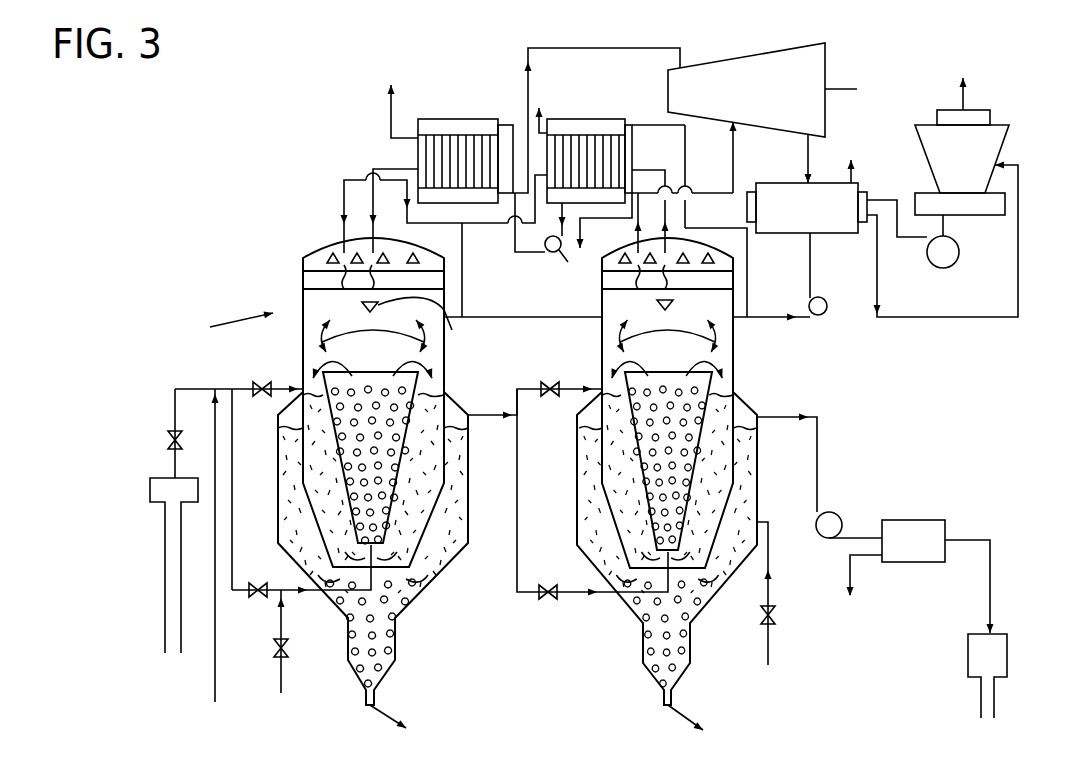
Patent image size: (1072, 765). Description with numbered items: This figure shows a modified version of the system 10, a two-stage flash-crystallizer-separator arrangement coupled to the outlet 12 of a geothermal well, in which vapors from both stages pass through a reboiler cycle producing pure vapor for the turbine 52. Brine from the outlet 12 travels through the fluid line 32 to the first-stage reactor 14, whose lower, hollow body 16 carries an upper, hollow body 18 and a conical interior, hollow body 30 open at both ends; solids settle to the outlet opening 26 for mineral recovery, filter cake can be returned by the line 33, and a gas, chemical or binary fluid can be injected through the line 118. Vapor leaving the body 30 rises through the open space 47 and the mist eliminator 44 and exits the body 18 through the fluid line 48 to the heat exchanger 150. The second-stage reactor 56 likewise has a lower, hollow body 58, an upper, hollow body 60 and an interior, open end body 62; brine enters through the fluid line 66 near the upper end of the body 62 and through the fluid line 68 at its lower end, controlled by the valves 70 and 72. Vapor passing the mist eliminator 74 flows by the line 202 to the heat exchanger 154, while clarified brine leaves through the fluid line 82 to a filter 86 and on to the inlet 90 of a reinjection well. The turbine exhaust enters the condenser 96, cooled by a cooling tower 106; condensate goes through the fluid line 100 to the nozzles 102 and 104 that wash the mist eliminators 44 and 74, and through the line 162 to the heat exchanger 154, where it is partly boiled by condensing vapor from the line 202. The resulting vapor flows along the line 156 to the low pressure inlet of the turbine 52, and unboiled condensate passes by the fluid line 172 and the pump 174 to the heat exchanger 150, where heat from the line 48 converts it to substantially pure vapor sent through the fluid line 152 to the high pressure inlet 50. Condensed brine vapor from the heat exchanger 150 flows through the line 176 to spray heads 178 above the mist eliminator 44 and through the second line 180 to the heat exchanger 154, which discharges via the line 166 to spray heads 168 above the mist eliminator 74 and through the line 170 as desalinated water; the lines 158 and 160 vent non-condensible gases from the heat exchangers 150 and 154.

The system 10 is at (228, 322).
The outlet of geothermal well 12 is at (175, 478).
The reactor 14 is at (436, 599).
The lower, hollow body 16 is at (468, 492).
The upper, hollow body 18 is at (447, 362).
The outlet opening 26 is at (358, 678).
The interior, hollow body 30 is at (347, 490).
The fluid line 32 is at (175, 395).
The line 33 is at (213, 668).
The mist eliminator 44 is at (301, 259).
The open space 47 is at (383, 359).
The fluid line 48 is at (387, 168).
The high pressure inlet 50 is at (682, 64).
The turbine 52 is at (790, 40).
The reactor 56 is at (716, 600).
The lower, hollow body 58 is at (757, 480).
The upper, hollow body 60 is at (735, 385).
The interior, open end body 62 is at (690, 493).
The fluid line 66 is at (522, 388).
The fluid line 68 is at (517, 550).
The valve 70 is at (555, 383).
The valve 72 is at (550, 601).
The mist eliminator 74 is at (735, 280).
The fluid line 82 is at (768, 414).
The filter 86 is at (940, 482).
The inlet of reinjection well 90 is at (992, 633).
The condenser 96 is at (805, 232).
The fluid line 100 is at (522, 318).
The nozzle 102 is at (423, 328).
The nozzle 104 is at (672, 304).
The cooling tower 106 is at (992, 147).
The line 118 is at (283, 618).
The heat exchanger 150 is at (467, 117).
The fluid line 152 is at (531, 80).
The heat exchanger 154 is at (607, 115).
The line 156 is at (733, 178).
The line 158 is at (392, 107).
The line 160 is at (552, 97).
The line 162 is at (744, 230).
The line 166 is at (633, 178).
The spray heads 168 is at (638, 293).
The line 170 is at (622, 214).
The fluid line 172 is at (526, 262).
The pump 174 is at (568, 262).
The line 176 is at (342, 190).
The spray heads 178 is at (348, 296).
The second line 180 is at (455, 224).
The line 202 is at (668, 182).